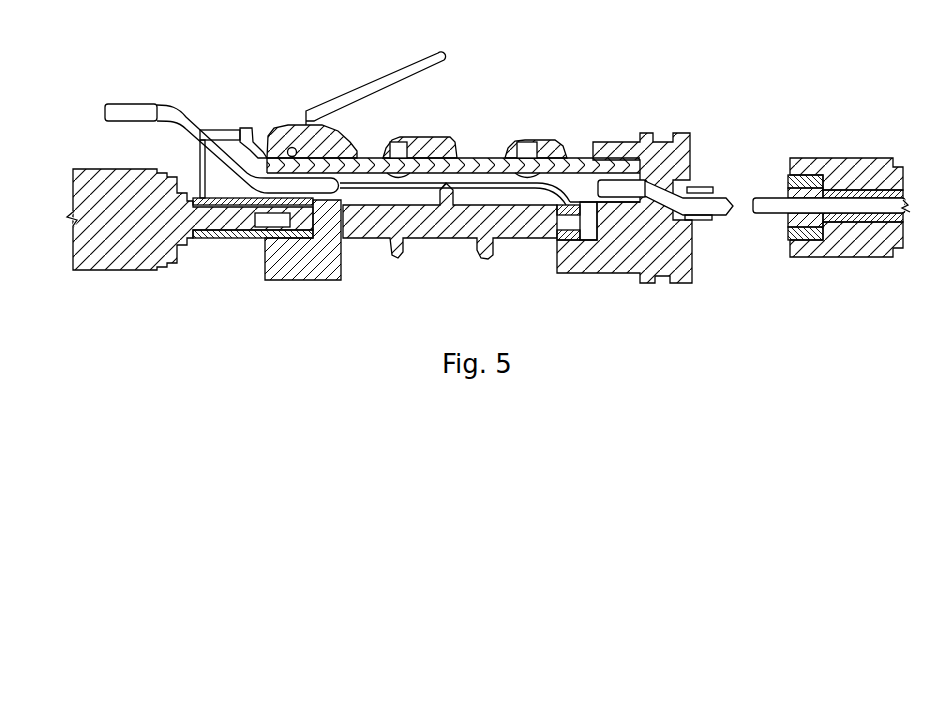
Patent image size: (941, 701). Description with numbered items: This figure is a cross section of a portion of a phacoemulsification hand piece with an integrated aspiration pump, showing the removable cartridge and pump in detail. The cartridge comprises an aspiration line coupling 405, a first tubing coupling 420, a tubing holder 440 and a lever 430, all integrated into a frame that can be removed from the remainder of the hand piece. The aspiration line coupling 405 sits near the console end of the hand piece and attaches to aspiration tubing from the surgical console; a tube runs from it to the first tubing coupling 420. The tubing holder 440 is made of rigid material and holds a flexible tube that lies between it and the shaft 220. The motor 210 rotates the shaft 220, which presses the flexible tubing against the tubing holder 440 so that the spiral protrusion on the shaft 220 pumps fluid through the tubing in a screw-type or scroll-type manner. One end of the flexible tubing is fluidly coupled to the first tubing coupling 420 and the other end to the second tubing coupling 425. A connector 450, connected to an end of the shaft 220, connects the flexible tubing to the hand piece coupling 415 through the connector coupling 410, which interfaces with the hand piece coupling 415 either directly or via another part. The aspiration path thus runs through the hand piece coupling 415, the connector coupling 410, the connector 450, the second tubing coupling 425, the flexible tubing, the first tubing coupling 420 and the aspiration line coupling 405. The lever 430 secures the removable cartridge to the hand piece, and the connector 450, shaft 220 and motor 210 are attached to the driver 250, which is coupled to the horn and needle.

The motor 210 is at (112, 272).
The shaft 220 is at (453, 236).
The driver 250 is at (848, 258).
The aspiration line coupling 405 is at (143, 102).
The connector coupling 410 is at (713, 196).
The hand piece coupling 415 is at (775, 198).
The first tubing coupling 420 is at (327, 207).
The second tubing coupling 425 is at (616, 180).
The lever 430 is at (404, 66).
The tubing holder 440 is at (573, 182).
The connector 450 is at (648, 284).